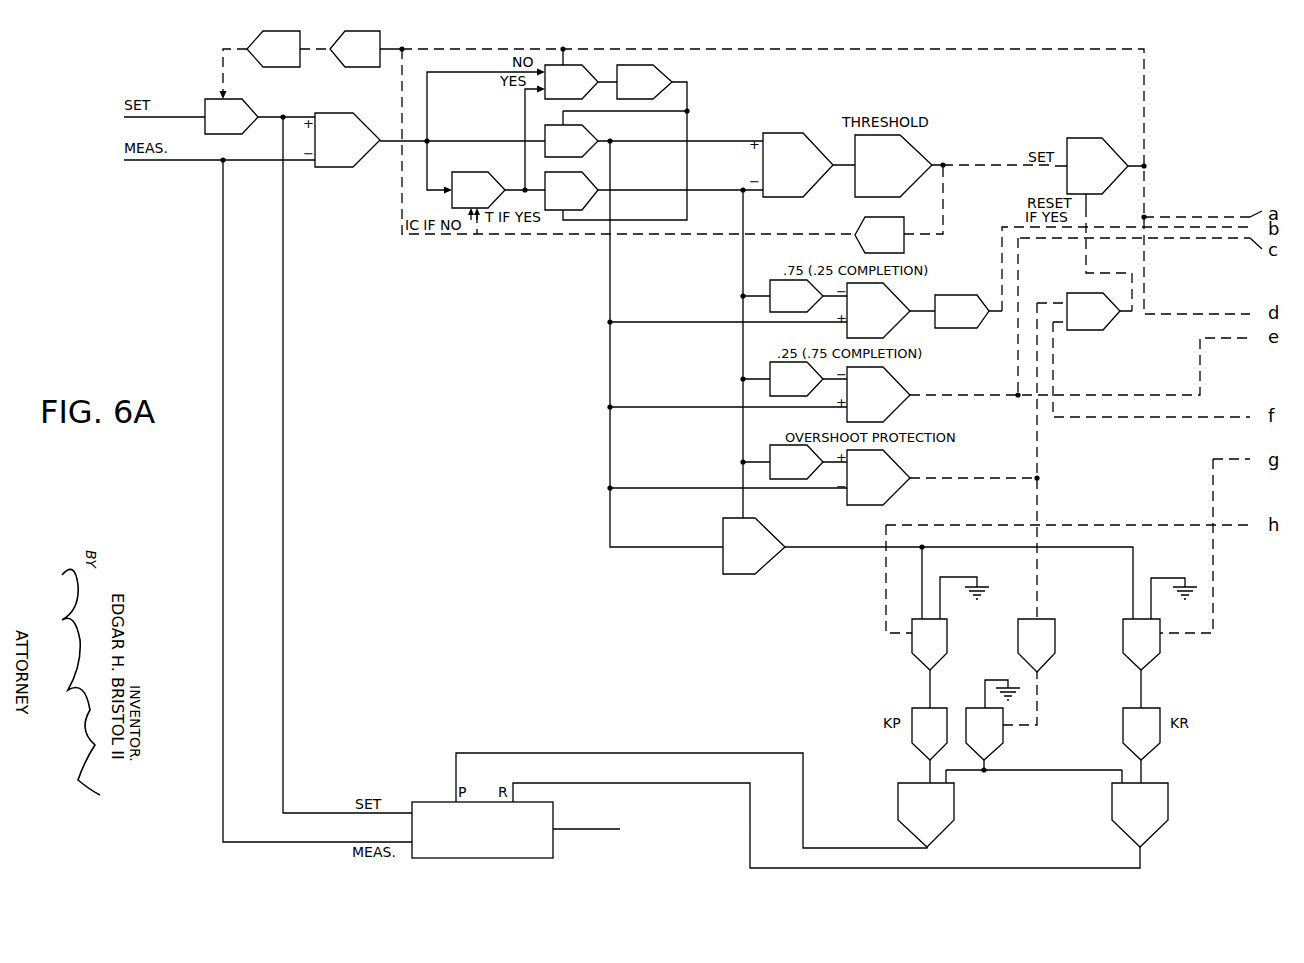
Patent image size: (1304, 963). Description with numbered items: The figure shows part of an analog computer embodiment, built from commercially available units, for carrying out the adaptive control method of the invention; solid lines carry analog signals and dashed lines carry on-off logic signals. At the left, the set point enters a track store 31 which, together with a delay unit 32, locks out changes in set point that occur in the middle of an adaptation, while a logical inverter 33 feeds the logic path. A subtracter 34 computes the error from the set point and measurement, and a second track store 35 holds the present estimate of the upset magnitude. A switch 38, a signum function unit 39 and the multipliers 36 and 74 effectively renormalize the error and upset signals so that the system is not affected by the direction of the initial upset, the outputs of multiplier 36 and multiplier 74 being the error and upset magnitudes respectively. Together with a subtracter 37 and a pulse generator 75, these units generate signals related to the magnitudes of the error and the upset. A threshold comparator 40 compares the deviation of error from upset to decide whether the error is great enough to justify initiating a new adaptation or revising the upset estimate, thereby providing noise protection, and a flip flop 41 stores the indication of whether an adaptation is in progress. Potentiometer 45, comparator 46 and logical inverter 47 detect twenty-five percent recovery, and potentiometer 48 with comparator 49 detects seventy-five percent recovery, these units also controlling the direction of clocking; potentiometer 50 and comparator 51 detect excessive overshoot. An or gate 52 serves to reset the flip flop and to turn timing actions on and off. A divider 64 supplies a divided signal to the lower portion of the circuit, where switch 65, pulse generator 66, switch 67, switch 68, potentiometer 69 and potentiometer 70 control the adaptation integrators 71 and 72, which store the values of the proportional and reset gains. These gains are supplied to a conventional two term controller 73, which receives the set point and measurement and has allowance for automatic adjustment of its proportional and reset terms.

The track store unit 31 is at (244, 102).
The delay unit 32 is at (267, 30).
The logical inverter 33 is at (369, 30).
The subtracter 34 is at (339, 113).
The track store unit 35 is at (452, 192).
The multiplier 36 is at (545, 128).
The subtracter 37 is at (786, 133).
The switch 38 is at (572, 65).
The signum function unit 39 is at (640, 65).
The comparator 40 is at (926, 158).
The flip flop 41 is at (1078, 138).
The potentiometer 45 is at (770, 285).
The comparator 46 is at (893, 300).
The logical inverter 47 is at (960, 328).
The potentiometer 48 is at (770, 369).
The comparator 49 is at (900, 388).
The potentiometer 50 is at (770, 453).
The comparator 51 is at (905, 470).
The OR gate 52 is at (1090, 330).
The divider 64 is at (723, 565).
The switch 65 is at (912, 642).
The pulse generator 66 is at (1018, 646).
The switch 67 is at (1123, 646).
The switch 68 is at (1000, 745).
The potentiometer 69 is at (1158, 745).
The potentiometer 70 is at (915, 745).
The integrator 71 is at (955, 806).
The integrator 72 is at (1169, 806).
The controller 73 is at (440, 802).
The multiplier 74 is at (552, 212).
The pulse generator 75 is at (860, 223).